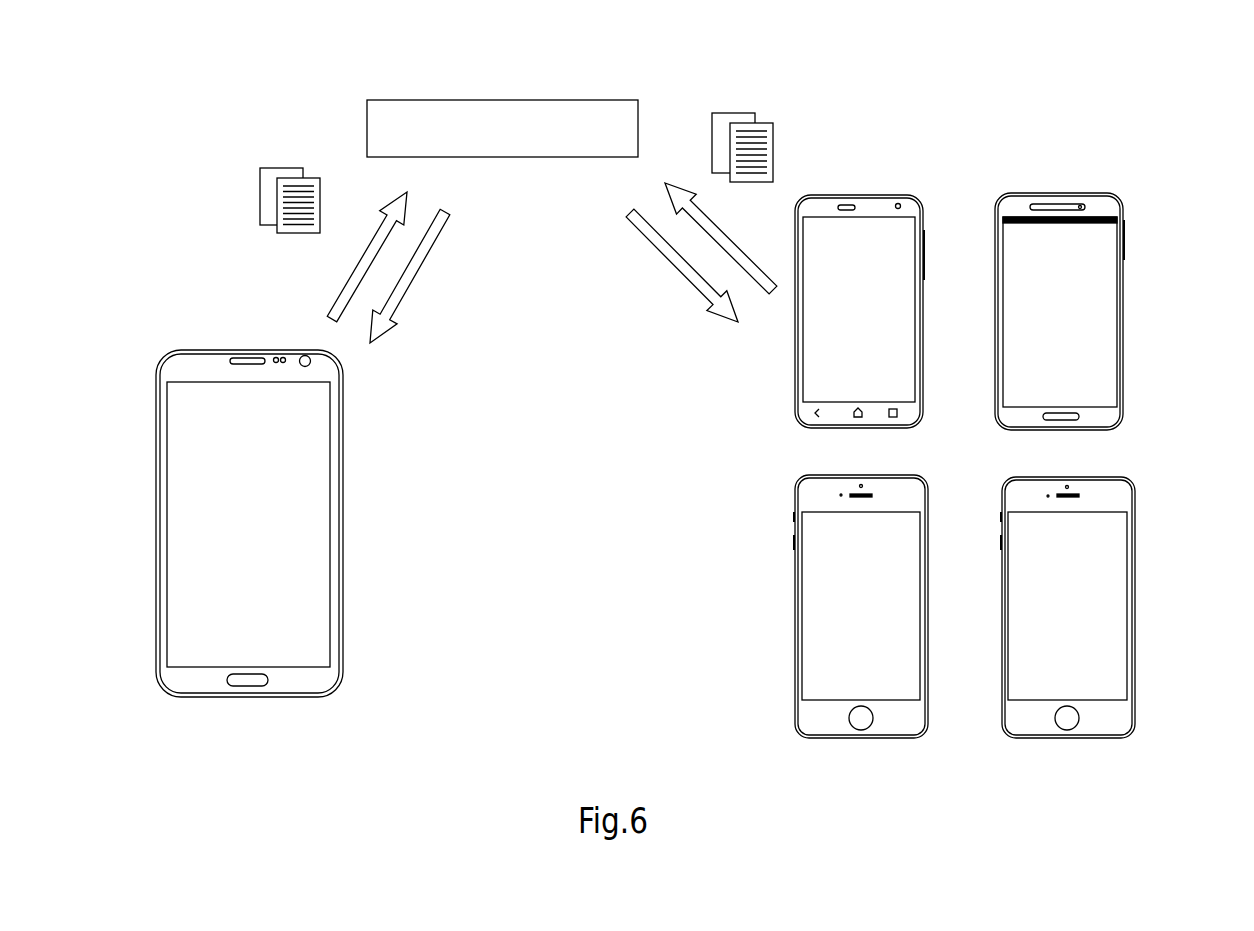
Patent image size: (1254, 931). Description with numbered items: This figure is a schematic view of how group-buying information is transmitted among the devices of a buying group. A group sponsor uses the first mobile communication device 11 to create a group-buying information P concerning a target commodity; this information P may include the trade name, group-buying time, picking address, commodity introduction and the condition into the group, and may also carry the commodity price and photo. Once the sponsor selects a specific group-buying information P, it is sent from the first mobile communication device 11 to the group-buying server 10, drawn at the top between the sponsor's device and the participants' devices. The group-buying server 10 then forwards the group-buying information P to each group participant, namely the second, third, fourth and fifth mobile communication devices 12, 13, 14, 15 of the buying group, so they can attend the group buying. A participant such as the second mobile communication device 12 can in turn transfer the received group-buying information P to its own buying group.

The group-buying server 10 is at (518, 157).
The first mobile communication device 11 is at (220, 347).
The second mobile communication device 12 is at (847, 193).
The third mobile communication device 13 is at (1065, 192).
The fourth mobile communication device 14 is at (795, 607).
The fifth mobile communication device 15 is at (1135, 607).
The group-buying information P is at (277, 168).